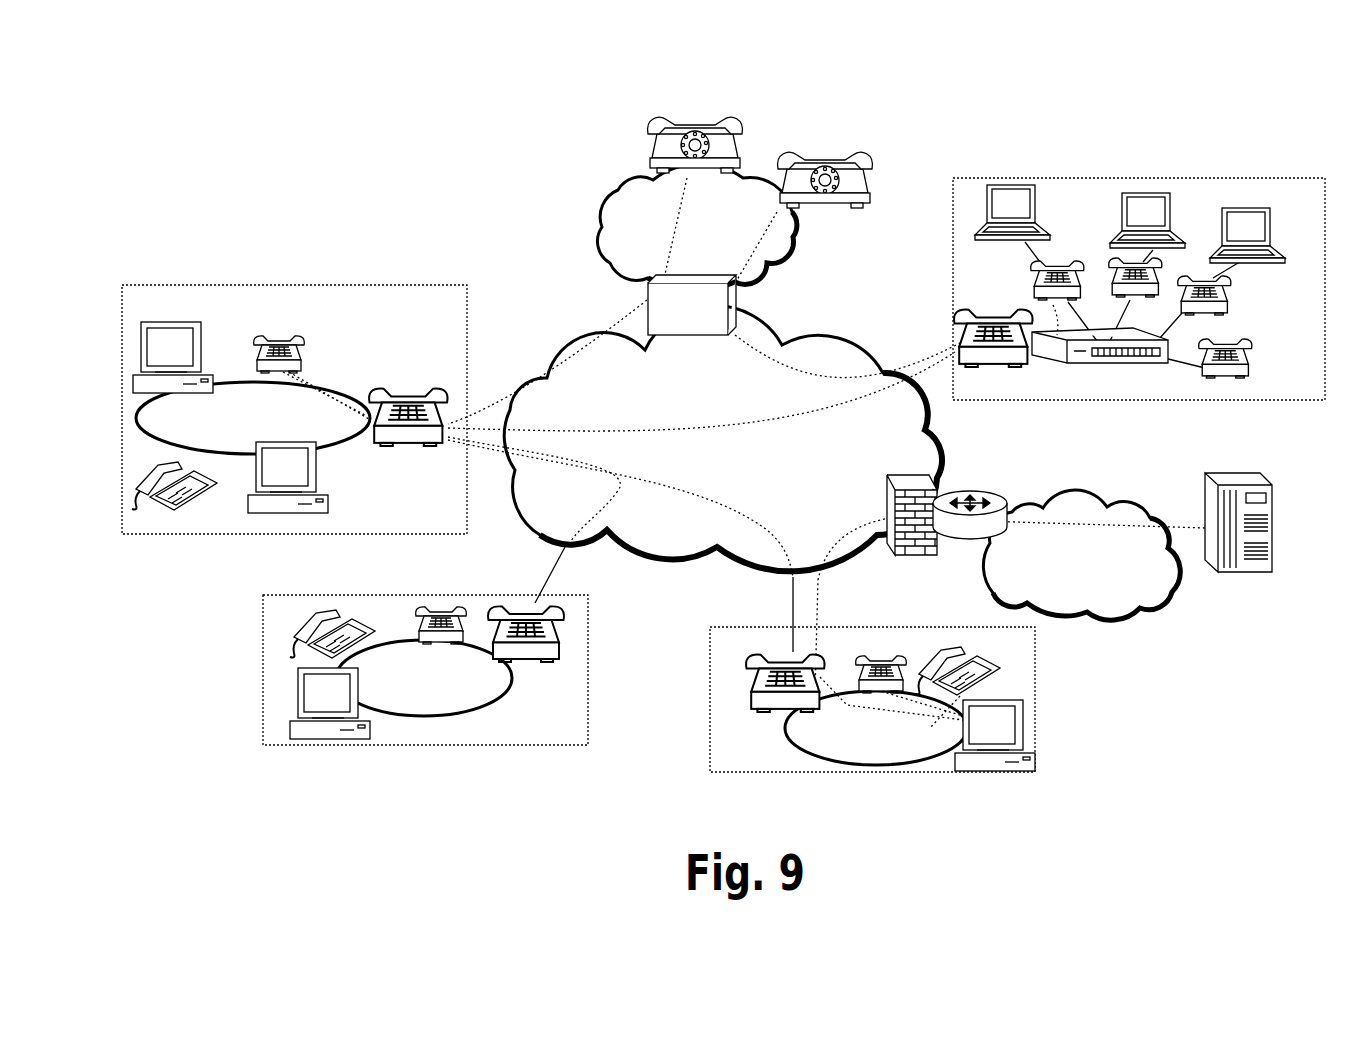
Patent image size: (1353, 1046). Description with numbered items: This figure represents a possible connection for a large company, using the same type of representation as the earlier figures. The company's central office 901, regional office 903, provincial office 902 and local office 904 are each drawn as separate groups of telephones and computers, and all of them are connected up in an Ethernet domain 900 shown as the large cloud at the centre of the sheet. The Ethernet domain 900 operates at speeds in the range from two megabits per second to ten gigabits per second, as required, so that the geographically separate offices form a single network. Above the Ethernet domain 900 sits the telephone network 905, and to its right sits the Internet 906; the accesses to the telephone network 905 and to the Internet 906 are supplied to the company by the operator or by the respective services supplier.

The Ethernet domain 900 is at (723, 439).
The central office 901 is at (307, 280).
The provincial office 902 is at (256, 668).
The regional office 903 is at (1100, 710).
The local office 904 is at (1062, 178).
The telephone network 905 is at (734, 226).
The Internet 906 is at (1079, 546).